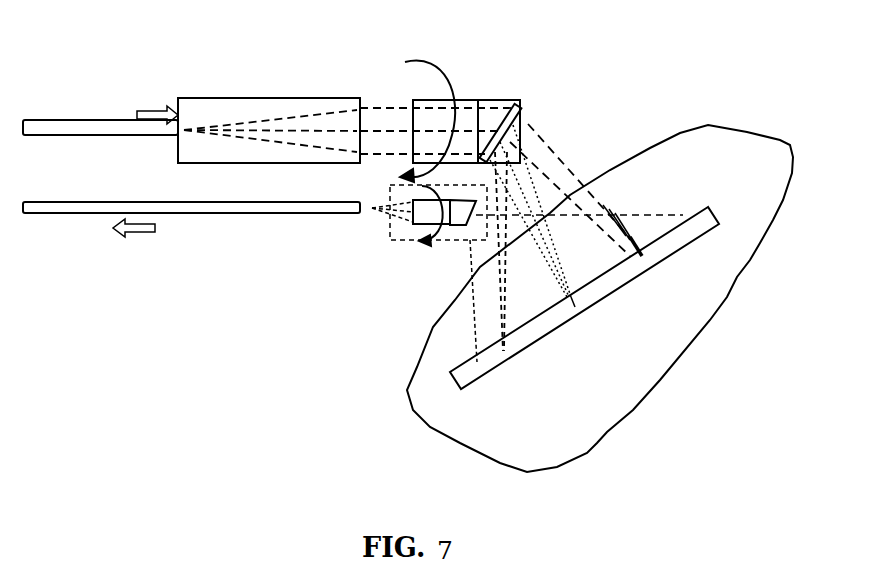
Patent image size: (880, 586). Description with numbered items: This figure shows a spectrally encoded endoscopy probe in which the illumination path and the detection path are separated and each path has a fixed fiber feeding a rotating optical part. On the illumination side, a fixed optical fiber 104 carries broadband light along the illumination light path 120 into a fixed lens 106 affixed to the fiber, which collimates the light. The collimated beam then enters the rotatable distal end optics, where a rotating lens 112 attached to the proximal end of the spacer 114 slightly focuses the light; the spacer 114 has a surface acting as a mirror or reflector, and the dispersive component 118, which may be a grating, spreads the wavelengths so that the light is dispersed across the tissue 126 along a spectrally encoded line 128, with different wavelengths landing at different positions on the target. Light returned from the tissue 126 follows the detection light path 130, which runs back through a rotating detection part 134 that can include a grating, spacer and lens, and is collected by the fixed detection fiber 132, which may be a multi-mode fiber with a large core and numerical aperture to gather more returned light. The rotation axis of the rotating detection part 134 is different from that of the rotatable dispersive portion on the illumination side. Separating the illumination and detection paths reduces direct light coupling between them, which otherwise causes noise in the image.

The optical fiber 104 is at (75, 120).
The illumination light path 120 is at (150, 98).
The fixed lens 106 is at (346, 115).
The rotating lens 112 is at (440, 116).
The spacer 114 is at (483, 92).
The dispersive component 118 is at (561, 210).
The detection fiber 132 is at (67, 214).
The detection light path 130 is at (125, 247).
The rotating detection part 134 is at (397, 245).
The tissue 126 is at (600, 298).
The spectrally encoded line 128 is at (487, 367).